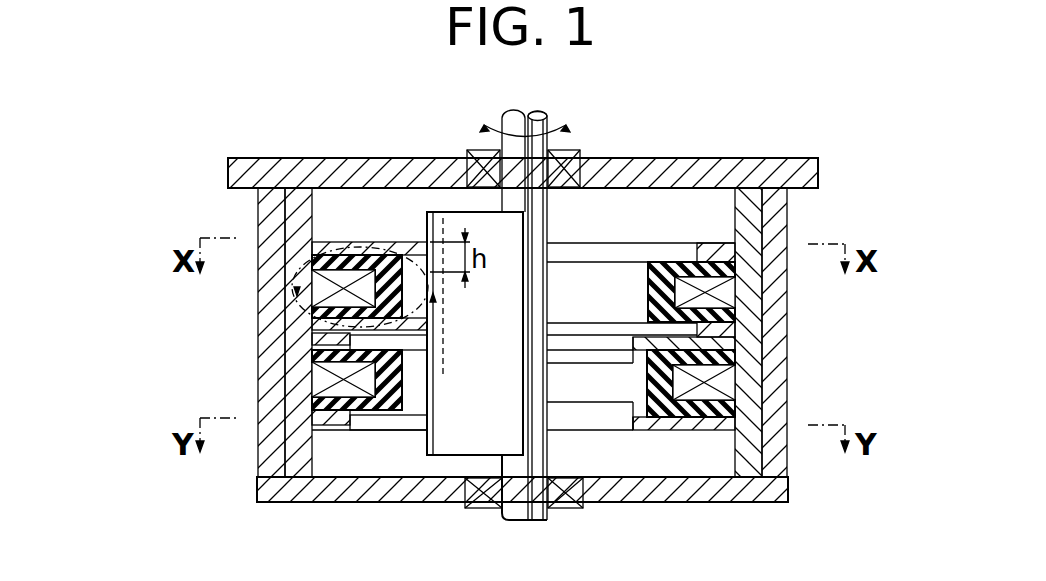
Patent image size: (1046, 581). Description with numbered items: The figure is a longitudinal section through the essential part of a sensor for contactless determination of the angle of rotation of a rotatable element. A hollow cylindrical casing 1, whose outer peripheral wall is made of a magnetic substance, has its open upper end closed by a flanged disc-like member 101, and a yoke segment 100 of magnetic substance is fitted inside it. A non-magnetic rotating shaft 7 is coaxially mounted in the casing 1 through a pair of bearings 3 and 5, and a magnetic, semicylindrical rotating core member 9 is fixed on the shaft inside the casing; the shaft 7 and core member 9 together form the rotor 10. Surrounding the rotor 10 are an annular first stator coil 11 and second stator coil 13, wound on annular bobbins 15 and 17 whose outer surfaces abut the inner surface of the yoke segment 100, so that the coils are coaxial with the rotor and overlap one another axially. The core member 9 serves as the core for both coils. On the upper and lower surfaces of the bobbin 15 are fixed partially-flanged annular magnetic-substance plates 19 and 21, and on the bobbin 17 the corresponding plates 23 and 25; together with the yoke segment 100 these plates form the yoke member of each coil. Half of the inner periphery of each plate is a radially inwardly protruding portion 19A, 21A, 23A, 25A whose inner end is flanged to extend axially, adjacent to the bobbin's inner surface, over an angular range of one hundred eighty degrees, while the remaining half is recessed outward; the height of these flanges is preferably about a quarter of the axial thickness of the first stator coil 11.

The casing 1 is at (788, 491).
The bearing 3 is at (567, 155).
The bearing 5 is at (575, 508).
The rotating shaft 7 is at (512, 120).
The rotating core member 9 is at (447, 212).
The rotor 10 is at (410, 62).
The first stator coil 11 is at (723, 295).
The second stator coil 13 is at (725, 385).
The bobbin 15 is at (648, 284).
The bobbin 17 is at (650, 388).
The magnetic-substance plate 19 is at (712, 252).
The protruding portion 19A is at (407, 242).
The magnetic-substance plate 21 is at (725, 328).
The protruding portion 21A is at (433, 318).
The magnetic-substance plate 23 is at (725, 347).
The protruding portion 23A is at (632, 348).
The magnetic-substance plate 25 is at (708, 432).
The protruding portion 25A is at (640, 432).
The yoke segment 100 is at (312, 444).
The flanged disc-like member 101 is at (690, 168).